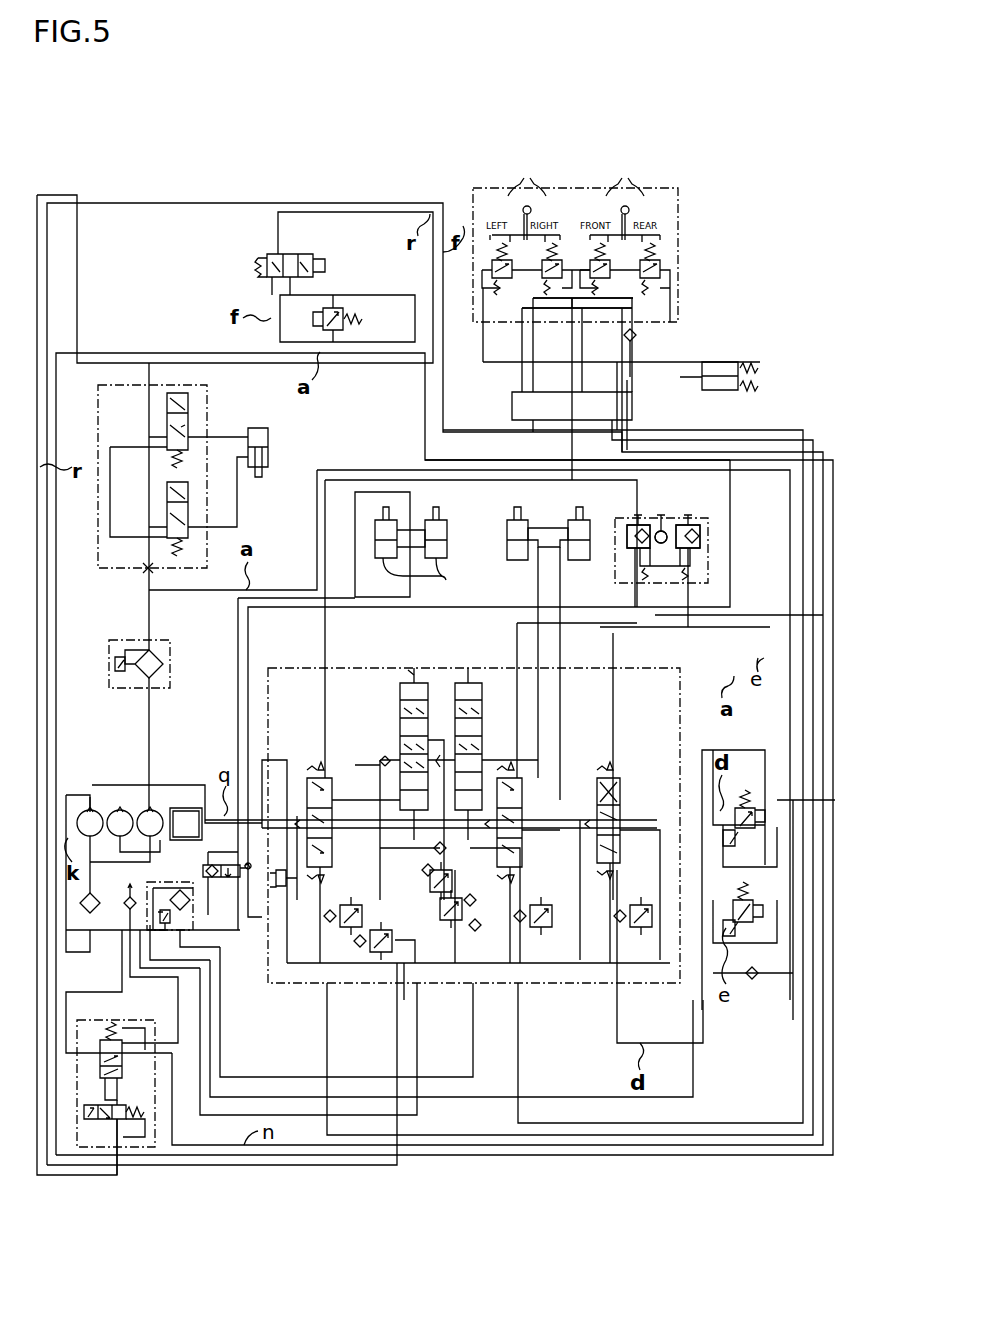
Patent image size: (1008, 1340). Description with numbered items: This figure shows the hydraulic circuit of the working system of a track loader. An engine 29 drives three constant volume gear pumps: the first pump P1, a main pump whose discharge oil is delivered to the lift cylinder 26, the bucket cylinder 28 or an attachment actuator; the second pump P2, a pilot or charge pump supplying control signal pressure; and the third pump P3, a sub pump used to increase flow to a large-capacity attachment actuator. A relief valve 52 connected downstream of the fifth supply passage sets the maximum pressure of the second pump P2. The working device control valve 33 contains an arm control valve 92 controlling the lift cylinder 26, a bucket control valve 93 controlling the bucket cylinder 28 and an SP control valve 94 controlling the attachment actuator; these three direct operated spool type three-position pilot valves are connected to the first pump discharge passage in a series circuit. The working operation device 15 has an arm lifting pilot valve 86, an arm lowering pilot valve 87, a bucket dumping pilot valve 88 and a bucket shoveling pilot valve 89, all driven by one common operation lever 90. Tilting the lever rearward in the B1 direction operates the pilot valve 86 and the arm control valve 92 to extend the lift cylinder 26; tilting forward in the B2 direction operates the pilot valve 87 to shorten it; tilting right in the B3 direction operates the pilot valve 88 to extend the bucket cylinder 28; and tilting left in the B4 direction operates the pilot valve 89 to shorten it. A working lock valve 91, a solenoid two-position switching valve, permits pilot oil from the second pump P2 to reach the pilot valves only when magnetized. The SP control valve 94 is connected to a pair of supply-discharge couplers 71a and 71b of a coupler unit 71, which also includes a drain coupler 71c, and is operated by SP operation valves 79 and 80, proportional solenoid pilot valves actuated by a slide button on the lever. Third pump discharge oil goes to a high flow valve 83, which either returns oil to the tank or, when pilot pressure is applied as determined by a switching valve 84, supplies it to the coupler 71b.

The working operation device 15 is at (686, 255).
The lift cylinder 26 is at (415, 544).
The bucket cylinder 28 is at (574, 517).
The engine 29 is at (186, 806).
The working device control valve 33 is at (303, 663).
The relief valve 52 is at (349, 295).
The coupler unit 71 is at (718, 544).
The pressured oil supply-discharge coupler 71a is at (637, 520).
The pressured oil supply-discharge coupler 71b is at (696, 521).
The drain coupler 71c is at (663, 515).
The SP operation valve 79 is at (748, 796).
The SP operation valve 80 is at (758, 935).
The high flow valve 83 is at (112, 1024).
The switching valve 84 is at (135, 1098).
The arm lifting pilot valve 86 is at (665, 250).
The arm lowering pilot valve 87 is at (593, 248).
The bucket dumping pilot valve 88 is at (556, 297).
The bucket shoveling pilot valve 89 is at (499, 297).
The operation lever 90 is at (539, 206).
The working lock valve 91 is at (319, 244).
The arm control valve 92 is at (307, 771).
The bucket control valve 93 is at (534, 746).
The SP control valve 94 is at (592, 776).
The first pump P1 is at (86, 810).
The second pump P2 is at (153, 810).
The third pump P3 is at (120, 810).
The rear tilting direction B1 is at (642, 180).
The front tilting direction B2 is at (614, 184).
The right tilting direction B3 is at (542, 180).
The left tilting direction B4 is at (510, 184).